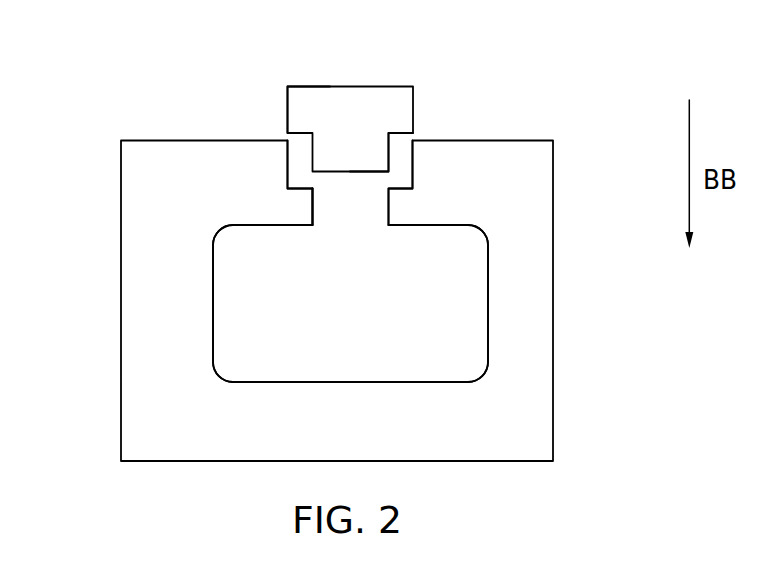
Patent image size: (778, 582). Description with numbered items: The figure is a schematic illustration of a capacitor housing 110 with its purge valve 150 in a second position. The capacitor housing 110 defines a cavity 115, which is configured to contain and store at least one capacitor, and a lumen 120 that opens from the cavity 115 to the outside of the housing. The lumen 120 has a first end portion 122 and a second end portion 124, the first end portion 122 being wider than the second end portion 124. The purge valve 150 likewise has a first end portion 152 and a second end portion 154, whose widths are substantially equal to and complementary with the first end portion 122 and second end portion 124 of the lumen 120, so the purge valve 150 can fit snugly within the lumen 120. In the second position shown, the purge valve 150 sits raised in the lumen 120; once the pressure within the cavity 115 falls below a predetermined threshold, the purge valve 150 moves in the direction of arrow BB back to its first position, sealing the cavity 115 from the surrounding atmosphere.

The capacitor housing 110 is at (530, 347).
The cavity 115 is at (244, 328).
The lumen 120 is at (361, 198).
The first end portion of the lumen 122 is at (293, 164).
The second end portion of the lumen 124 is at (313, 210).
The purge valve 150 is at (371, 93).
The first end portion of the purge valve 152 is at (292, 107).
The second end portion of the purge valve 154 is at (383, 158).